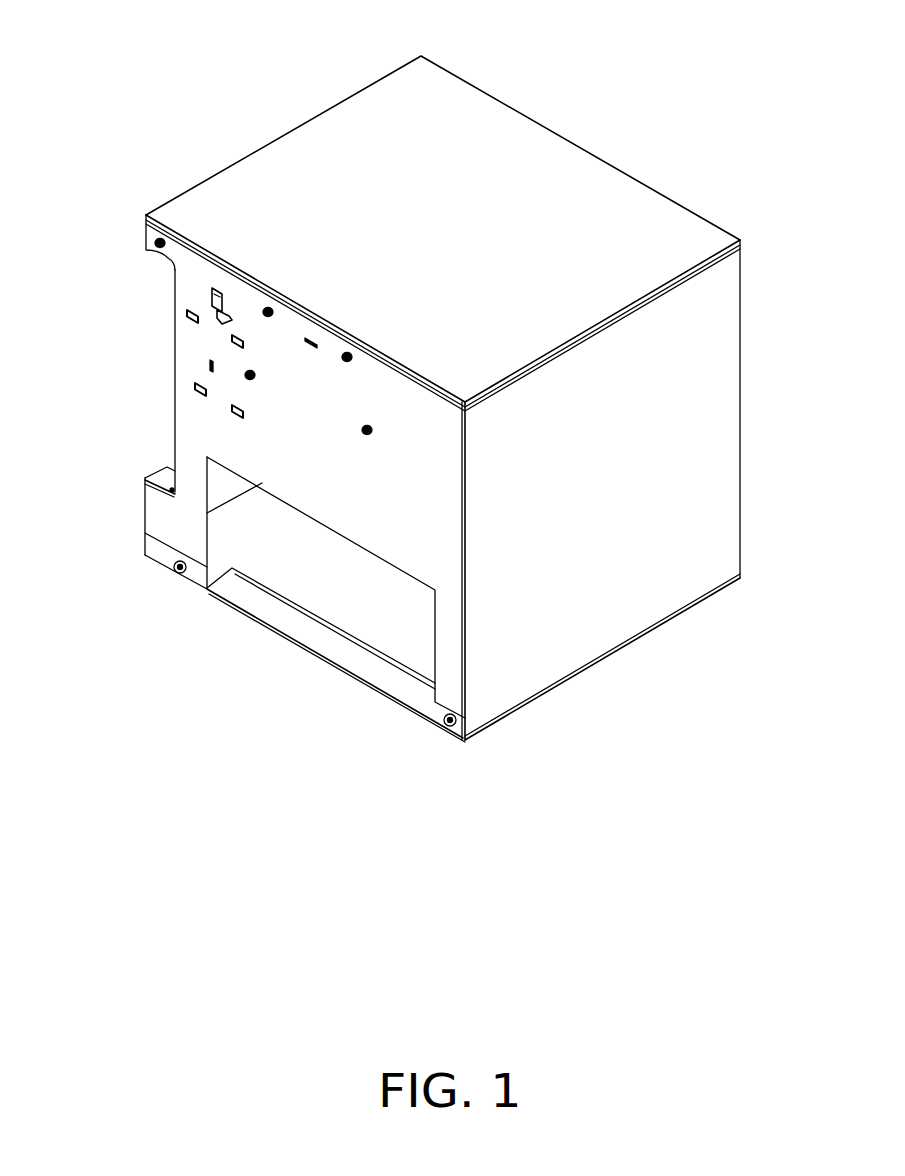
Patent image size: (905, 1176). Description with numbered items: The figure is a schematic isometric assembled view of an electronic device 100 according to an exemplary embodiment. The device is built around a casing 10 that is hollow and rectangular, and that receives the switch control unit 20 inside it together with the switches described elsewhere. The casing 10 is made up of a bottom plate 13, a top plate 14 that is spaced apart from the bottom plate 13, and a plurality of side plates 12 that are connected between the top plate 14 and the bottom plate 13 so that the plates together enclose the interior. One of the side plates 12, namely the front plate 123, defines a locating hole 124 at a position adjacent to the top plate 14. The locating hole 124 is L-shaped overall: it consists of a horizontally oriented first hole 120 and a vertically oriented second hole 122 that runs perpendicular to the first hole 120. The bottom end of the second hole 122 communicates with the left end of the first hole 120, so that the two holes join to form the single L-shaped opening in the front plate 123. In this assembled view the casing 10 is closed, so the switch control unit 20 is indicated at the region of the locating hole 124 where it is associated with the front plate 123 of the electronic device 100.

The electronic device 100 is at (218, 46).
The casing 10 is at (658, 422).
The side plates 12 is at (212, 423).
The bottom plate 13 is at (644, 634).
The top plate 14 is at (540, 173).
The switch control unit 20 is at (225, 310).
The first hole 120 is at (225, 323).
The second hole 122 is at (214, 294).
The front plate 123 is at (158, 508).
The locating hole 124 is at (85, 273).